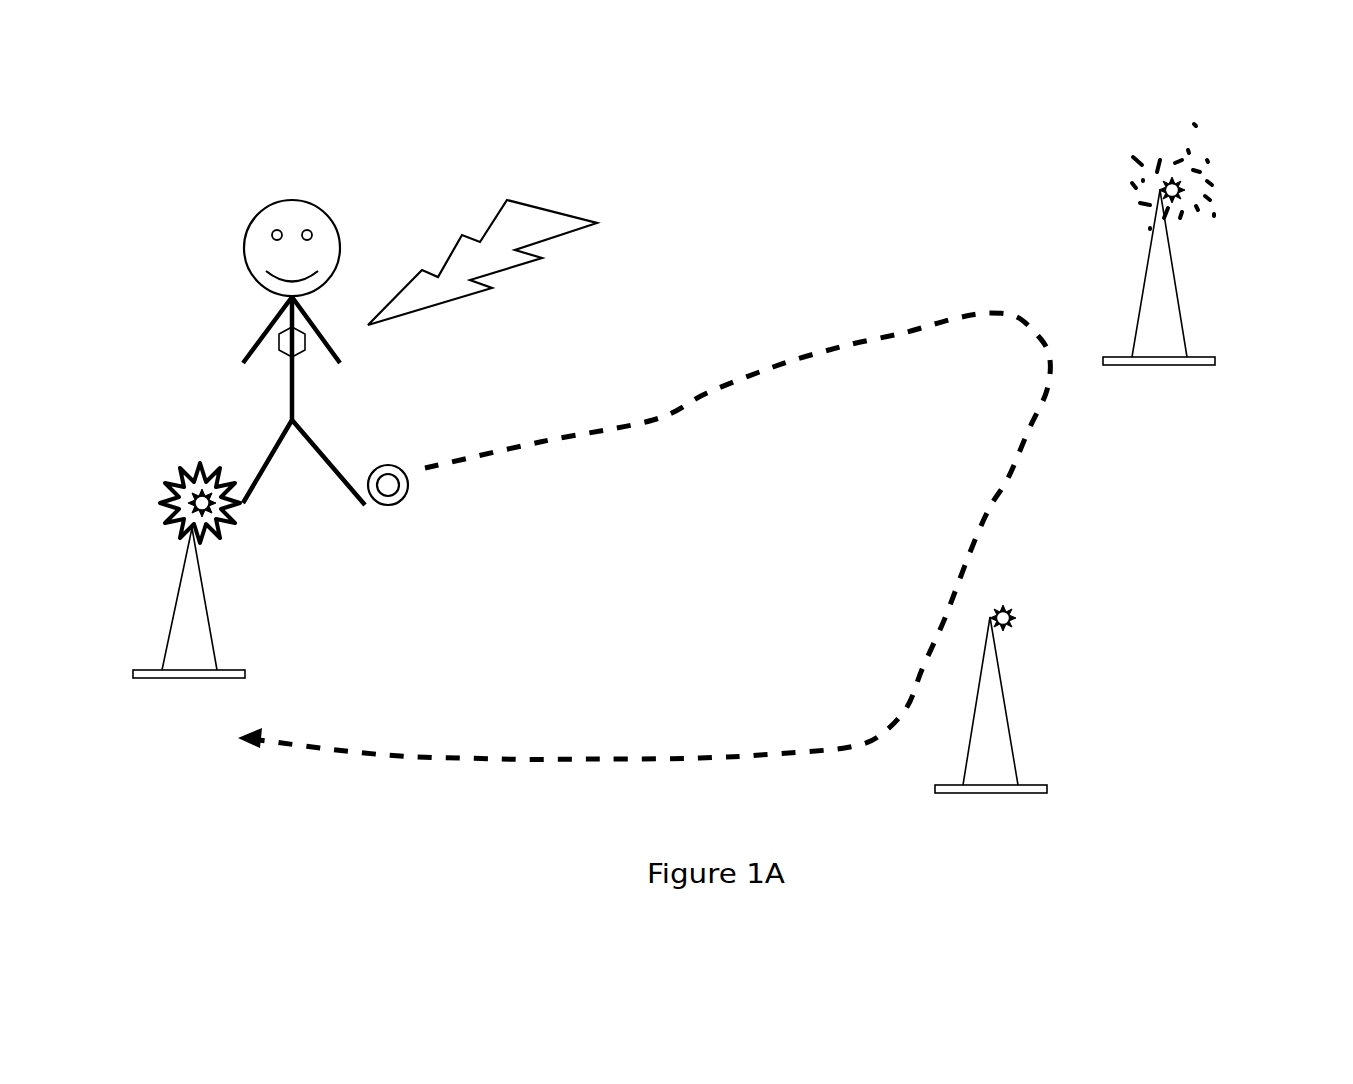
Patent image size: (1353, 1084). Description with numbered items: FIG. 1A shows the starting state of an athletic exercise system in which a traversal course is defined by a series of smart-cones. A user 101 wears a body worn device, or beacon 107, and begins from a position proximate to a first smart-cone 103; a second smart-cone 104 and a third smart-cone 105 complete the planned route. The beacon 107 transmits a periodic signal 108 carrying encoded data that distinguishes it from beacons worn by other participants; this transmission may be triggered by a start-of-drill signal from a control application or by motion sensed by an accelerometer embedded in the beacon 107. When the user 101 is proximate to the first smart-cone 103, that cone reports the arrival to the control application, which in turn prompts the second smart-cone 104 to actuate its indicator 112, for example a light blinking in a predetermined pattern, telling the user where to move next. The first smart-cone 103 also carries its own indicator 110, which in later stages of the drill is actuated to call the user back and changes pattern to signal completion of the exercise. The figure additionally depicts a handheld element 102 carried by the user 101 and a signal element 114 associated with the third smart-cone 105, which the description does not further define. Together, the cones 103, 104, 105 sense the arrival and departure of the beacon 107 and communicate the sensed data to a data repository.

The user 101 is at (347, 183).
The mobile device 102 is at (393, 450).
The first smart-cone 103 is at (216, 609).
The second smart-cone 104 is at (1196, 294).
The third smart-cone 105 is at (1019, 726).
The body worn device (beacon) 107 is at (264, 328).
The periodic signal 108 is at (567, 206).
The indicator of the first smart-cone 110 is at (160, 453).
The indicator of the second smart-cone 112 is at (1193, 161).
The signal 114 is at (1017, 589).